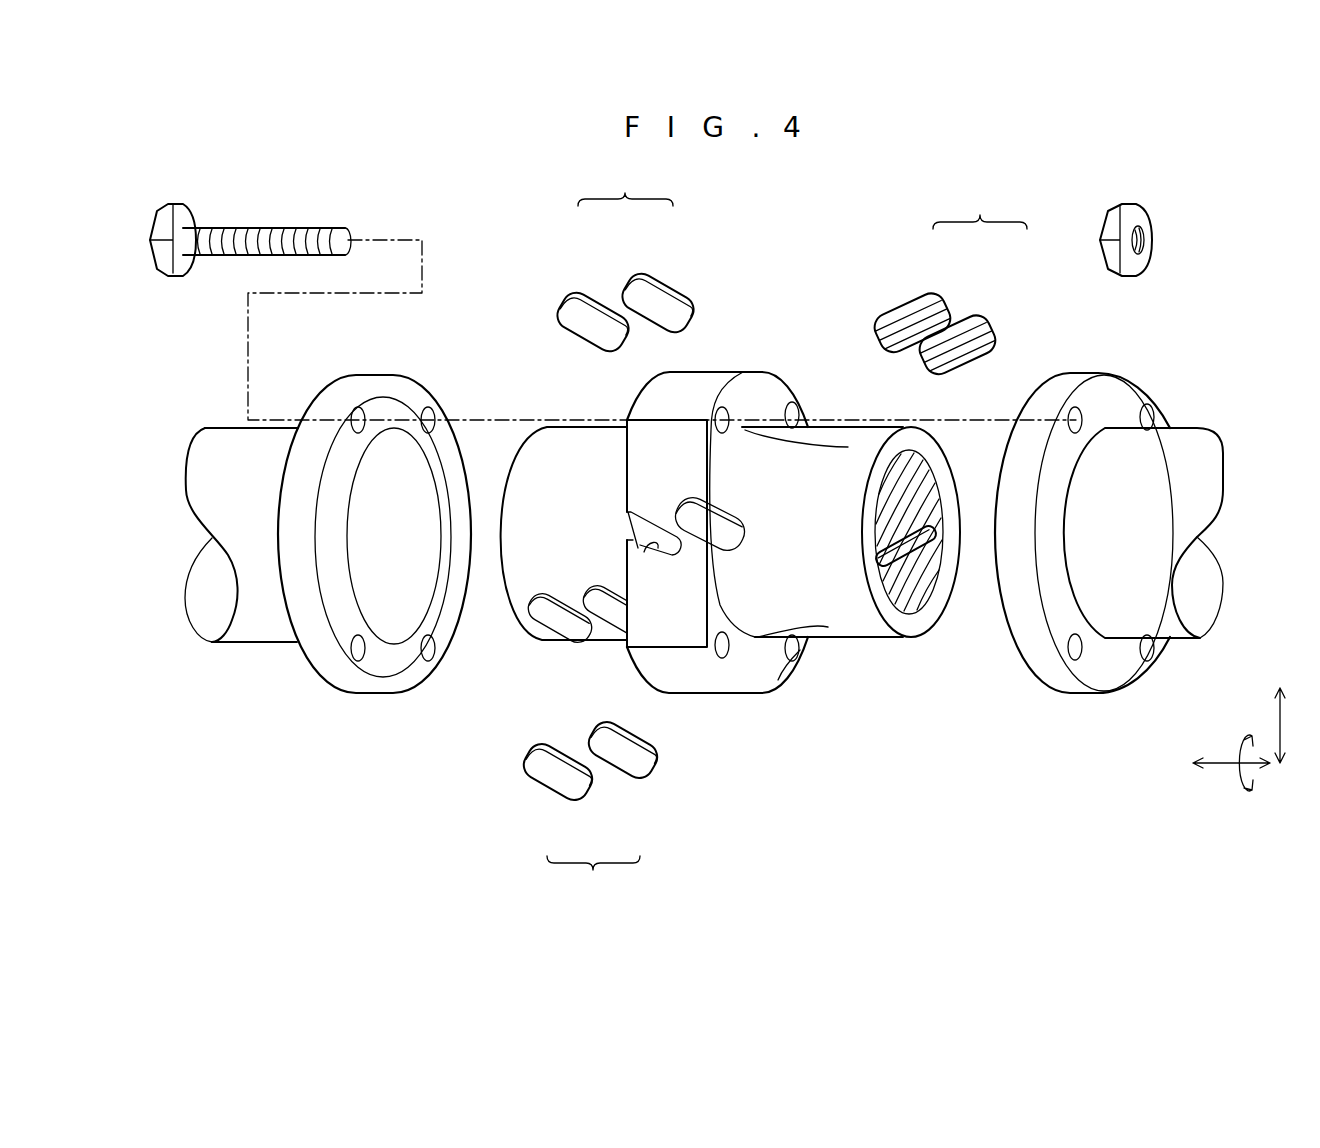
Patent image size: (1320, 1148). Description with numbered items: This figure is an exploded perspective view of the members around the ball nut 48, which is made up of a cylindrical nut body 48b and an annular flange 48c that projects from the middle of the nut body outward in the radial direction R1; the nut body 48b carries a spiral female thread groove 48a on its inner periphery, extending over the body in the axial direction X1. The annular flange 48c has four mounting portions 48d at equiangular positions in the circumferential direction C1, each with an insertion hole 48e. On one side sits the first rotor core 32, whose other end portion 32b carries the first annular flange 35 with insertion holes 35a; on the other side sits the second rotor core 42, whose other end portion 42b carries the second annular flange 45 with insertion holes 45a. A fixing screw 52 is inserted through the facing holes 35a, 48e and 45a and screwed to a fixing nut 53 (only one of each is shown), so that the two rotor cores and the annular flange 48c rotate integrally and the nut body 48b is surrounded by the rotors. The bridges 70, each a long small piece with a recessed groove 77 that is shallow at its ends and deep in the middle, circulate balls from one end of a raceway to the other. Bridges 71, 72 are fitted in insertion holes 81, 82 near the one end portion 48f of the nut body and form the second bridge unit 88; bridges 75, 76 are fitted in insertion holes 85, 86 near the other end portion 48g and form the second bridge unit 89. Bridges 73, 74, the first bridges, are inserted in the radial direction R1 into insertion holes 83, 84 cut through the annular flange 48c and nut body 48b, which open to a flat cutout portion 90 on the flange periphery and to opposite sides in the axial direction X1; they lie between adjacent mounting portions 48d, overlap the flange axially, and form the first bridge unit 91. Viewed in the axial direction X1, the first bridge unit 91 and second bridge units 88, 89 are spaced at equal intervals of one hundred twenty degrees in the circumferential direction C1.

The fixing screw 52 is at (194, 218).
The fixing nut 53 is at (1138, 215).
The first rotor core 32 is at (258, 598).
The other end portion of the first rotor core 32b is at (278, 625).
The first annular flange 35 is at (330, 403).
The insertion holes 35a is at (434, 418).
The ball nut 48 is at (730, 553).
The female thread groove 48a is at (869, 564).
The nut body 48b is at (805, 690).
The annular flange 48c is at (713, 683).
The mounting portions 48d is at (802, 407).
The insertion hole 48e is at (790, 400).
The one end portion of the nut body 48f is at (517, 520).
The other end portion of the nut body 48g is at (873, 438).
The cutout portion 90 is at (633, 467).
The insertion hole 81 is at (548, 625).
The insertion hole 82 is at (612, 612).
The insertion hole 83 is at (650, 552).
The insertion hole 84 is at (705, 545).
The insertion hole 85 is at (897, 520).
The insertion hole 86 is at (943, 560).
The bridges 70 is at (519, 778).
The bridge 71 is at (568, 783).
The bridge 72 is at (627, 760).
The second bridge unit 88 is at (591, 811).
The bridge 73 is at (592, 330).
The bridge 74 is at (656, 305).
The first bridge unit 91 is at (625, 256).
The bridge 75 is at (930, 312).
The bridge 76 is at (995, 336).
The second bridge unit 89 is at (948, 280).
The recessed groove 77 is at (933, 352).
The second annular flange 45 is at (1048, 399).
The insertion holes 45a is at (1077, 412).
The second rotor core 42 is at (1190, 438).
The other end portion of the second rotor core 42b is at (1102, 449).
The radial direction R1 is at (1278, 725).
The axial direction X1 is at (1225, 765).
The circumferential direction C1 is at (1248, 792).